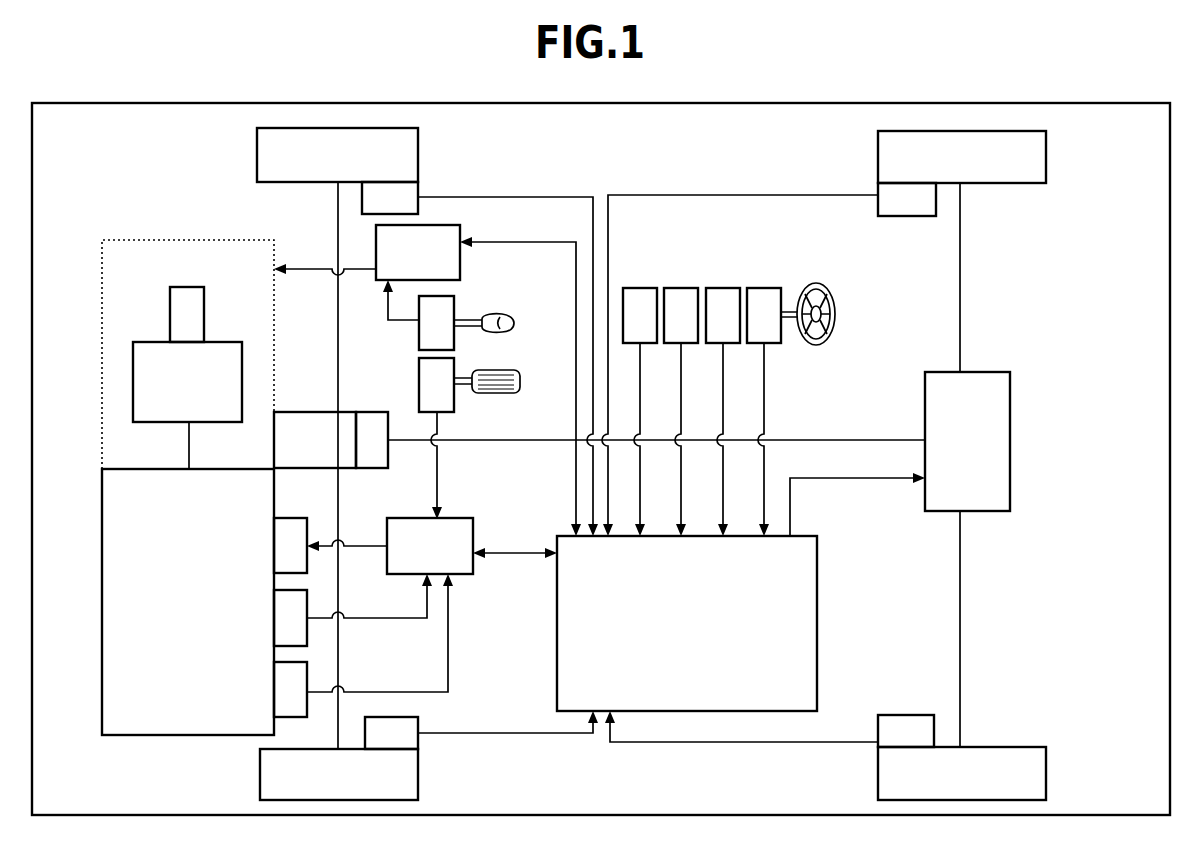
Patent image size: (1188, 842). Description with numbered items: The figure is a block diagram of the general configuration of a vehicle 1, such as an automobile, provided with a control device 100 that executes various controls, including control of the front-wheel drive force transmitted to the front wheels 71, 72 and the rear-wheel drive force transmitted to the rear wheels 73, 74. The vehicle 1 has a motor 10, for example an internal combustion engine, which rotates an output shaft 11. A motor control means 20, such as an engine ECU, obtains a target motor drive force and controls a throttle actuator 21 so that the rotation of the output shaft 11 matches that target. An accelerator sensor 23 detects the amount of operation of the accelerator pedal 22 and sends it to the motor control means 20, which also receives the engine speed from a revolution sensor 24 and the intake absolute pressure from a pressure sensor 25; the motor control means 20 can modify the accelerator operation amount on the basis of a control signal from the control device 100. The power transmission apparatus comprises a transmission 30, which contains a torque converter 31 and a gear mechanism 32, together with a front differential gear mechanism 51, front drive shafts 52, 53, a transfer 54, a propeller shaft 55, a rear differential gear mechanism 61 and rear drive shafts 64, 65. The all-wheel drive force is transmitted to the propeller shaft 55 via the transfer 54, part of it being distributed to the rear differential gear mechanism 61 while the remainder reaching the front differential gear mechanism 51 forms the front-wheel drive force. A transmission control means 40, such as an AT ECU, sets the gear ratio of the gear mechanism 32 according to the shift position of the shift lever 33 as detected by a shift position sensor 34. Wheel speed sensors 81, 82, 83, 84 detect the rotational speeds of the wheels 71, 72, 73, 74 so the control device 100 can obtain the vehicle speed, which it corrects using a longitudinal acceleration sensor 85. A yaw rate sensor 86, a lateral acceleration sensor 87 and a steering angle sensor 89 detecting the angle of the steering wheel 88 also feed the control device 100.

The vehicle 1 is at (1140, 103).
The motor 10 is at (188, 602).
The output shaft 11 is at (189, 449).
The motor control means 20 is at (472, 546).
The throttle actuator 21 is at (330, 545).
The accelerator pedal 22 is at (520, 381).
The accelerator sensor 23 is at (436, 438).
The revolution sensor 24 is at (353, 610).
The pressure sensor 25 is at (363, 645).
The transmission 30 is at (222, 240).
The torque converter 31 is at (187, 382).
The gear mechanism 32 is at (187, 314).
The shift lever 33 is at (514, 323).
The shift position sensor 34 is at (418, 315).
The transmission control means 40 is at (427, 380).
The front differential gear mechanism 51 is at (315, 440).
The front drive shaft 52 is at (338, 387).
The front drive shaft 53 is at (338, 507).
The transfer 54 is at (372, 440).
The propeller shaft 55 is at (518, 440).
The rear differential gear mechanism 61 is at (998, 372).
The rear drive shaft 64 is at (960, 332).
The rear drive shaft 65 is at (960, 567).
The front wheel 71 is at (337, 155).
The front wheel 72 is at (339, 774).
The rear wheel 73 is at (962, 157).
The rear wheel 74 is at (962, 773).
The wheel speed sensor 81 is at (480, 359).
The wheel speed sensor 82 is at (481, 730).
The wheel speed sensor 83 is at (769, 359).
The wheel speed sensor 84 is at (769, 729).
The longitudinal acceleration sensor 85 is at (640, 412).
The yaw rate sensor 86 is at (681, 412).
The lateral acceleration sensor 87 is at (723, 412).
The steering wheel 88 is at (835, 314).
The steering angle sensor 89 is at (764, 412).
The control device 100 is at (817, 566).